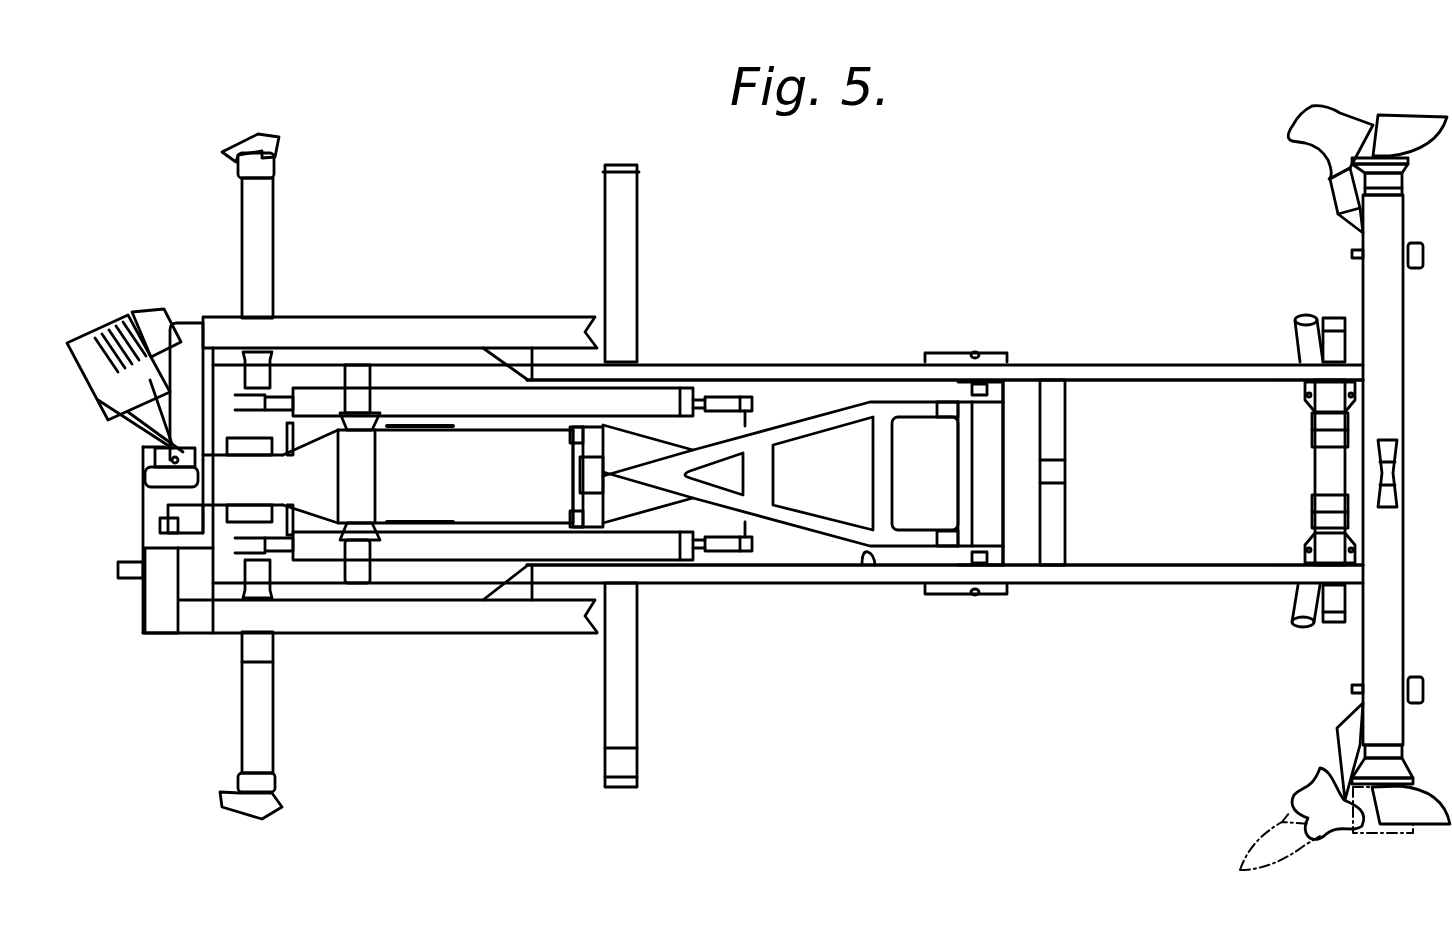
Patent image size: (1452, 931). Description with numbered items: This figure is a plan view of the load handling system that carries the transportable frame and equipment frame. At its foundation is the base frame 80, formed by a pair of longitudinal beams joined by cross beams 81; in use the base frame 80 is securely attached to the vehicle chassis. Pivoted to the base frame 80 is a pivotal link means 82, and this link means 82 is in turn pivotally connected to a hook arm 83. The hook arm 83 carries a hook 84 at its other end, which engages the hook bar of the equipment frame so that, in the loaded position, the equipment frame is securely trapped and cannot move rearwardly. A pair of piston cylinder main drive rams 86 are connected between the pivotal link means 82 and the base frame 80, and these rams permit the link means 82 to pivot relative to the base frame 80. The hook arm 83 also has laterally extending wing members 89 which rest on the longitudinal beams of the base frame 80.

The base frame 80 is at (422, 375).
The cross beams 81 is at (185, 337).
The pivotal link means 82 is at (197, 552).
The hook arm 83 is at (482, 491).
The hook 84 is at (162, 482).
The piston cylinder main drive rams 86 is at (664, 397).
The wing members 89 is at (354, 368).